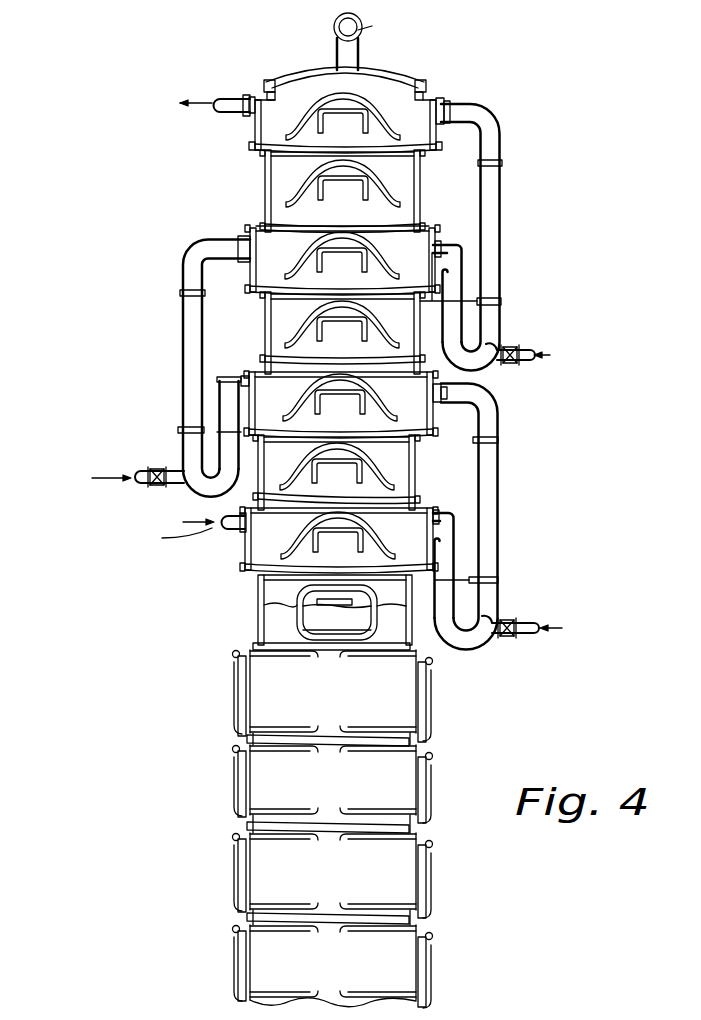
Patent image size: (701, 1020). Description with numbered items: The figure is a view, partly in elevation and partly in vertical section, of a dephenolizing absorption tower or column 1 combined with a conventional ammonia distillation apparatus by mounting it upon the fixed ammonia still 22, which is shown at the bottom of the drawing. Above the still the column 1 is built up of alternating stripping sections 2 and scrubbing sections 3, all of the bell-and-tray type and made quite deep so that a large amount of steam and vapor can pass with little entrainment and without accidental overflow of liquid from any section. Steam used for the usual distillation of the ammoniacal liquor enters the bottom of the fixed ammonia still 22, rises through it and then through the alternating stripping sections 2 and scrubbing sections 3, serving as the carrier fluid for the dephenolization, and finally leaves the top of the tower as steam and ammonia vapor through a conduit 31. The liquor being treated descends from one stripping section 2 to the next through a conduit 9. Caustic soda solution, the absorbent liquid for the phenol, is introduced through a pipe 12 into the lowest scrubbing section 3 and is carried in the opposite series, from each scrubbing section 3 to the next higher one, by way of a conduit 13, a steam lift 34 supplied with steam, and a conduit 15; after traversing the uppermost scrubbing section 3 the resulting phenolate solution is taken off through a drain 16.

The absorption tower 1 is at (327, 510).
The stripping section 2 is at (408, 187).
The scrubbing section 3 is at (410, 102).
The conduit 9 is at (318, 622).
The pipe 12 is at (238, 530).
The conduit 13 is at (222, 404).
The conduit 15 is at (196, 300).
The drain 16 is at (233, 108).
The fixed ammonia still 22 is at (413, 743).
The conduit 31 is at (352, 44).
The steam lift 34 is at (182, 480).